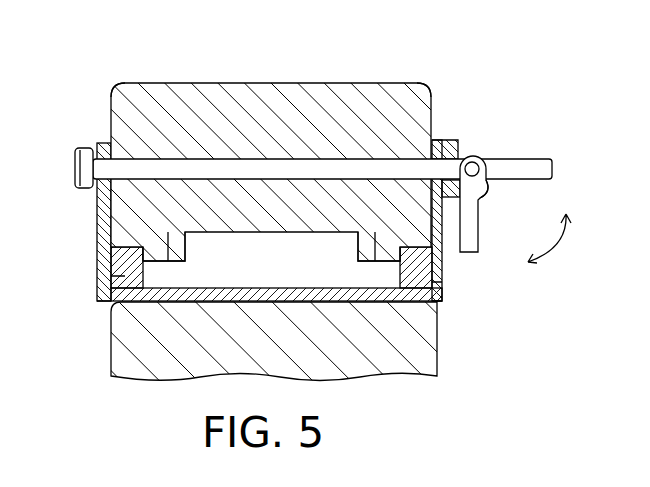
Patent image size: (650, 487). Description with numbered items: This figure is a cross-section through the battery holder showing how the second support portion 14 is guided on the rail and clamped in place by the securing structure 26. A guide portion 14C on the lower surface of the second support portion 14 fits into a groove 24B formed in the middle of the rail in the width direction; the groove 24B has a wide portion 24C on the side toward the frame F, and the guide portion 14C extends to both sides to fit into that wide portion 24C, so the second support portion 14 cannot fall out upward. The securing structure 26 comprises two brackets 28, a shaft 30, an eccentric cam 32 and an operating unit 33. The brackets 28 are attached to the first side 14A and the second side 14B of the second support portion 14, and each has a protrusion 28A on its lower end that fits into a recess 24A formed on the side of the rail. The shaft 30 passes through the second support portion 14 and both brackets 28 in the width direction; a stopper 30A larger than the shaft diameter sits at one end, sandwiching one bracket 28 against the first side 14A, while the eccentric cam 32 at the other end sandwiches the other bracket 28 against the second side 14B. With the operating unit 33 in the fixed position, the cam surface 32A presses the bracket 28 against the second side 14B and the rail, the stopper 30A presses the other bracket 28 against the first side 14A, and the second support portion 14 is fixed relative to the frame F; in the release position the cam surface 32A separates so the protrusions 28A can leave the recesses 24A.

The second support portion 14 is at (277, 83).
The first side 14A is at (117, 82).
The second side 14B is at (428, 83).
The guide portion 14C is at (165, 257).
The recess 24A is at (113, 264).
The groove 24B is at (262, 295).
The wide portion 24C is at (118, 277).
The securing structure 26 is at (313, 184).
The bracket 28 is at (103, 143).
The protrusion 28A is at (104, 302).
The shaft 30 is at (330, 158).
The stopper 30A is at (75, 160).
The eccentric cam 32 is at (475, 160).
The cam surface 32A is at (490, 193).
The operating unit 33 is at (509, 179).
The frame F is at (437, 366).